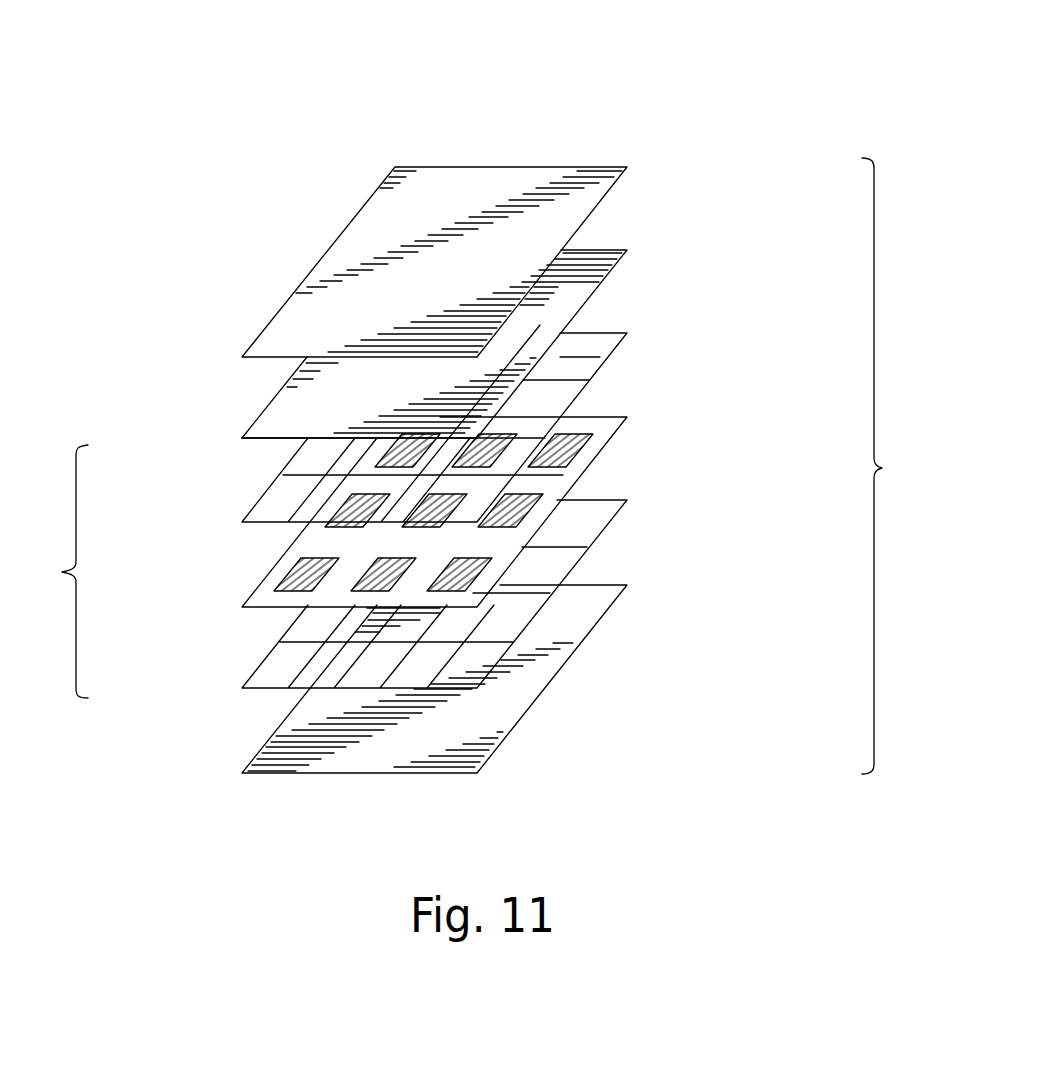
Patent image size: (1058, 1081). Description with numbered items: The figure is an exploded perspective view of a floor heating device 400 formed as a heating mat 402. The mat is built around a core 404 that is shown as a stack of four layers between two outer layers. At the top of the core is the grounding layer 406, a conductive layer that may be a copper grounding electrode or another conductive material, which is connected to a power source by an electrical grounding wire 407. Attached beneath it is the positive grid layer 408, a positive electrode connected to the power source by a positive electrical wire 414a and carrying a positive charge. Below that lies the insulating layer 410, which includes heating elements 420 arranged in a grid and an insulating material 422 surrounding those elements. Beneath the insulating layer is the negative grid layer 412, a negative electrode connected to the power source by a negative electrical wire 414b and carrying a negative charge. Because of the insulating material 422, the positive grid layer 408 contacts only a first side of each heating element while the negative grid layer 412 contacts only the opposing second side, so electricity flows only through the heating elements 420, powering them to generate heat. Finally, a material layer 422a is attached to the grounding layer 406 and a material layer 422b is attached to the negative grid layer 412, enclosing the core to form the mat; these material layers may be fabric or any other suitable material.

The heating device 400 is at (646, 102).
The heating mat 402 is at (897, 466).
The core 404 is at (53, 571).
The grounding layer 406 is at (613, 268).
The electrical grounding wire 407 is at (271, 440).
The positive grid layer 408 is at (598, 368).
The insulating layer 410 is at (603, 446).
The negative grid layer 412 is at (581, 557).
The positive electrical wire 414a is at (268, 522).
The negative electrical wire 414b is at (264, 688).
The heating elements 420 is at (588, 434).
The insulating material 422 is at (563, 477).
The material layer 422a is at (601, 197).
The material layer 422b is at (556, 668).